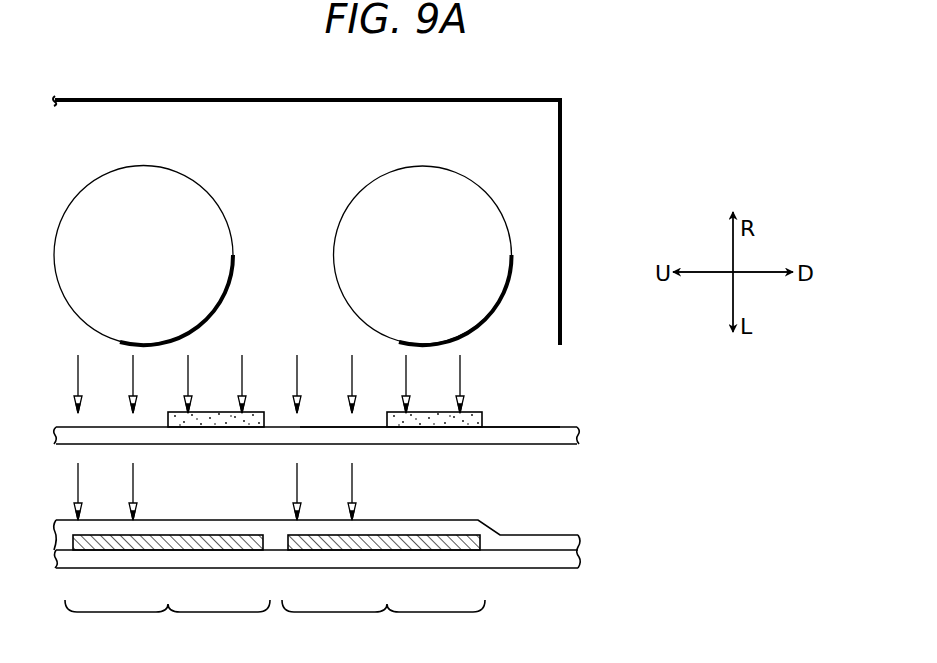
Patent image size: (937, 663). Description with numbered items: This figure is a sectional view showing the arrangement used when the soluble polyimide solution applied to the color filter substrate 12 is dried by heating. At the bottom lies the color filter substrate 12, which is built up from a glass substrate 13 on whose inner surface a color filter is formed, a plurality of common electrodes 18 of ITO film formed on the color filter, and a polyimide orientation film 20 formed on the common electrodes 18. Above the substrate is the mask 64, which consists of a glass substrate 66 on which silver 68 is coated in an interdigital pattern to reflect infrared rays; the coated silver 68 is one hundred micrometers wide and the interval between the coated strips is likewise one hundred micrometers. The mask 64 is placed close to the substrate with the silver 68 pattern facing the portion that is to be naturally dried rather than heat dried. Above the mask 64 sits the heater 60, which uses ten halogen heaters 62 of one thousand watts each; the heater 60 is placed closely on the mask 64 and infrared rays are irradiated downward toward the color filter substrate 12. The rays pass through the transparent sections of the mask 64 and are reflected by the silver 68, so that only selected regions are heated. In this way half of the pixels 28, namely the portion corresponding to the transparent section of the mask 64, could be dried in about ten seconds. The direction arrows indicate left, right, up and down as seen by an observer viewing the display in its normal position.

The heater 60 is at (520, 93).
The halogen heater 62 is at (86, 330).
The mask 64 is at (580, 436).
The glass substrate 66 is at (554, 430).
The silver 68 is at (482, 420).
The color filter substrate 12 is at (387, 555).
The glass substrate 13 is at (580, 558).
The polyimide orientation film 20 is at (580, 545).
The common electrode 18 is at (452, 548).
The pixel 28 is at (275, 625).